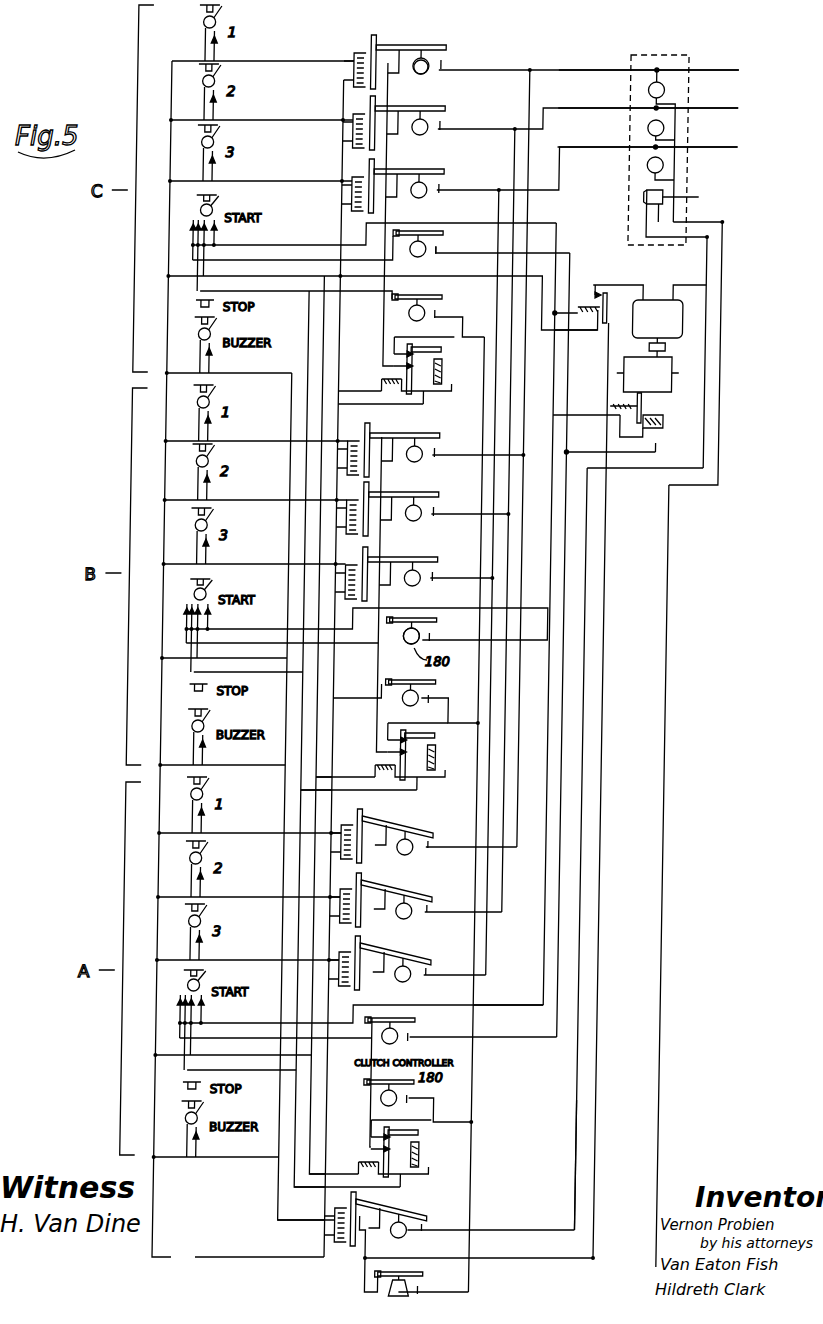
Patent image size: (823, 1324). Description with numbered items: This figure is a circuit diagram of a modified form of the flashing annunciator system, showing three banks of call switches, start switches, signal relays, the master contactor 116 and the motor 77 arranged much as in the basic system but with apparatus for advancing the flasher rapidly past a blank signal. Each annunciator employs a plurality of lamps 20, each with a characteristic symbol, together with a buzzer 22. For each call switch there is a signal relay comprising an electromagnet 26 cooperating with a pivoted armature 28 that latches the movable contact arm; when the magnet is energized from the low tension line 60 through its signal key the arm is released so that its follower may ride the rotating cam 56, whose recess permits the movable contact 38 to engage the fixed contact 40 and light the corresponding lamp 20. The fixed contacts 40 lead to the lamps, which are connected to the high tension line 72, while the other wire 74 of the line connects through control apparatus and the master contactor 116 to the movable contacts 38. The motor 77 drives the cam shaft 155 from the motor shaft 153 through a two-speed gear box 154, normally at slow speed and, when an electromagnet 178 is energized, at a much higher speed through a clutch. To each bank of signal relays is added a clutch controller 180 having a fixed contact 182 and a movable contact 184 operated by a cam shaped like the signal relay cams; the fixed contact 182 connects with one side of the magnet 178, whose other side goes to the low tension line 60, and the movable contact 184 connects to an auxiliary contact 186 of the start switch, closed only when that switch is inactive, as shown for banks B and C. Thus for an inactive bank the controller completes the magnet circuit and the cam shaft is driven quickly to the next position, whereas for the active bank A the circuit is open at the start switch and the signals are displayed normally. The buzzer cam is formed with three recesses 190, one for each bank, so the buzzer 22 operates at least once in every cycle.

The lamps 20 is at (668, 88).
The buzzer 22 is at (648, 197).
The electromagnet 26 is at (393, 51).
The pivoted armature 28 is at (393, 51).
The movable contact 38 is at (358, 54).
The fixed contact 40 is at (450, 68).
The rotating cam 56 is at (428, 74).
The low tension line 60 is at (248, 663).
The high tension line 72 is at (503, 1254).
The wire 74 is at (597, 1180).
The motor 77 is at (657, 319).
The master contactor 116 is at (460, 1290).
The motor shaft 153 is at (671, 347).
The two-speed gear box 154 is at (647, 374).
The cam shaft 155 is at (685, 373).
The electromagnet 178 is at (670, 428).
The clutch controller 180 is at (440, 214).
The fixed contact 182 is at (444, 258).
The movable contact 184 is at (414, 230).
The auxiliary contact 186 is at (195, 226).
The recesses 190 is at (408, 1236).